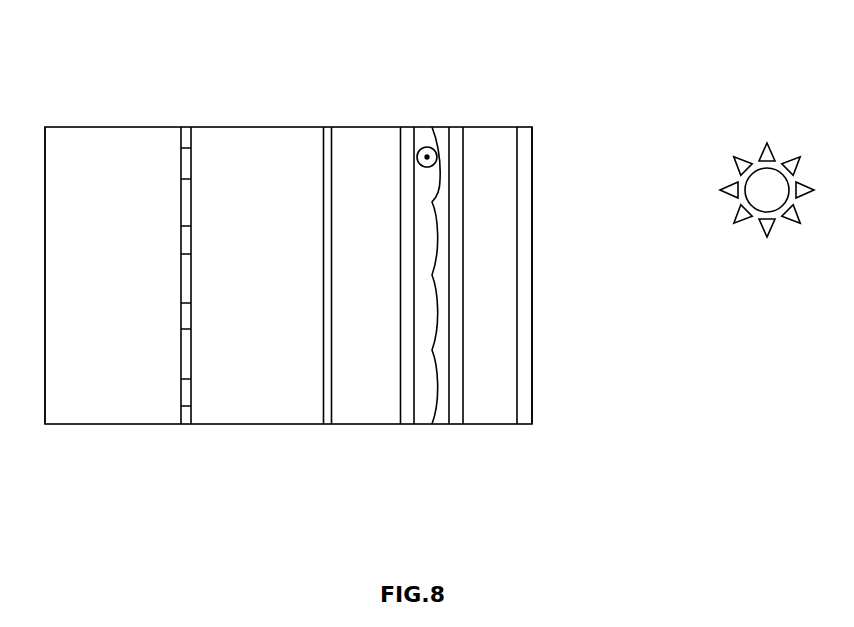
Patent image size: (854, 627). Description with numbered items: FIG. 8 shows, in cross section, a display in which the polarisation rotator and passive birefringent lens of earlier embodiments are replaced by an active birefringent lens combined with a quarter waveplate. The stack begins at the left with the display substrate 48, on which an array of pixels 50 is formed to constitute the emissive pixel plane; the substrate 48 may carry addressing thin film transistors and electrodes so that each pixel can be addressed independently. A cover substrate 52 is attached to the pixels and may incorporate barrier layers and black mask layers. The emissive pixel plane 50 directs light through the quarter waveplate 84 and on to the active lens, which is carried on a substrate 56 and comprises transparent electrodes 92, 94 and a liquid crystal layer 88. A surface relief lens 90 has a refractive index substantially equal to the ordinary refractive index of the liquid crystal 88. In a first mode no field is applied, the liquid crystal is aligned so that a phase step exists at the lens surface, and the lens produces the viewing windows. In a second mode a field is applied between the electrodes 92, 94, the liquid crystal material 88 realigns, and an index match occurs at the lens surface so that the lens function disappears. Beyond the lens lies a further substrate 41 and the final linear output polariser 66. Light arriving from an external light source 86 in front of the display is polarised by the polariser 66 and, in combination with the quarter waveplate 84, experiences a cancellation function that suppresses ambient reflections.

The display substrate 48 is at (112, 424).
The array of pixels 50 is at (186, 424).
The cover substrate 52 is at (258, 424).
The quarter waveplate 84 is at (327, 424).
The substrate 56 is at (375, 424).
The transparent electrode 92 is at (407, 127).
The liquid crystal layer 88 is at (427, 147).
The surface relief lens 90 is at (442, 424).
The transparent electrode 94 is at (457, 127).
The substrate 41 is at (481, 424).
The linear output polariser 66 is at (522, 424).
The external light source 86 is at (766, 140).